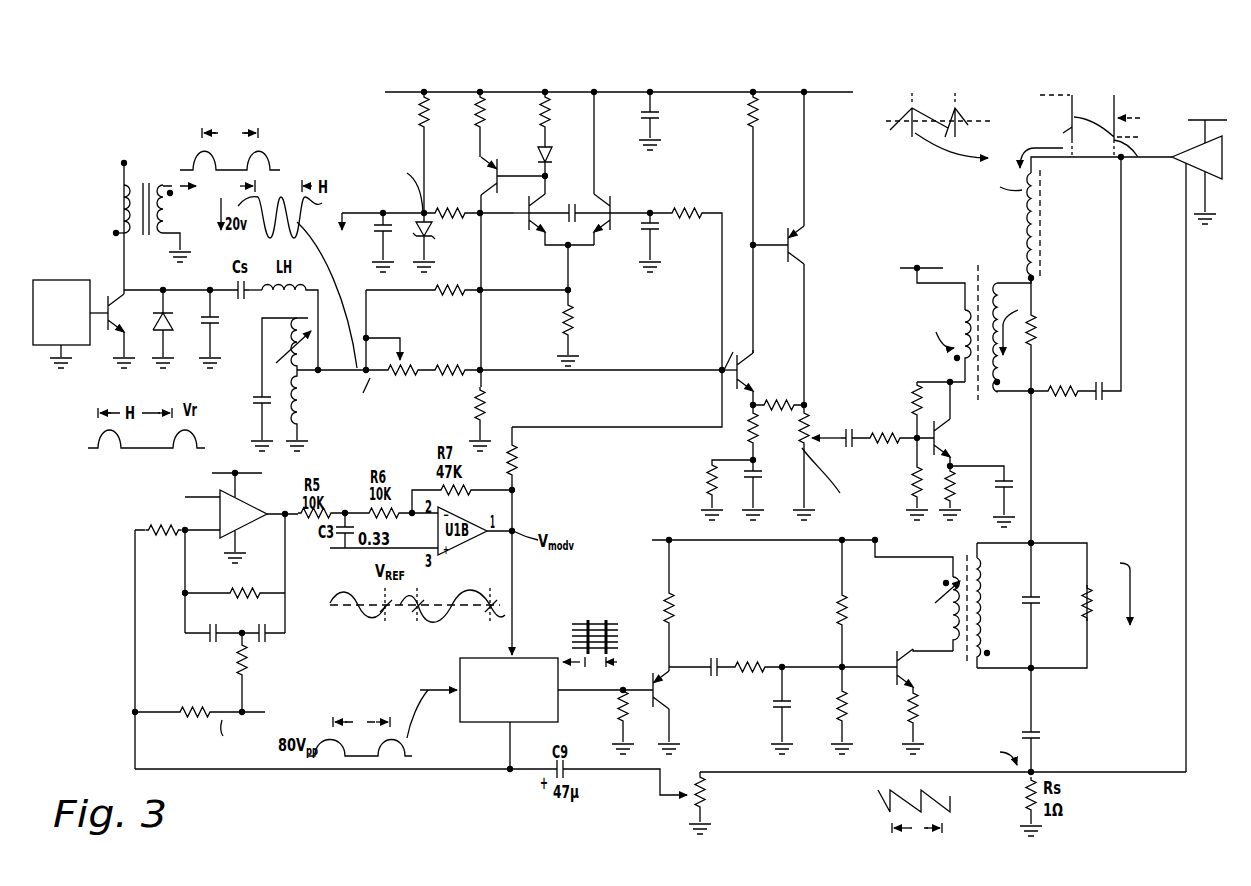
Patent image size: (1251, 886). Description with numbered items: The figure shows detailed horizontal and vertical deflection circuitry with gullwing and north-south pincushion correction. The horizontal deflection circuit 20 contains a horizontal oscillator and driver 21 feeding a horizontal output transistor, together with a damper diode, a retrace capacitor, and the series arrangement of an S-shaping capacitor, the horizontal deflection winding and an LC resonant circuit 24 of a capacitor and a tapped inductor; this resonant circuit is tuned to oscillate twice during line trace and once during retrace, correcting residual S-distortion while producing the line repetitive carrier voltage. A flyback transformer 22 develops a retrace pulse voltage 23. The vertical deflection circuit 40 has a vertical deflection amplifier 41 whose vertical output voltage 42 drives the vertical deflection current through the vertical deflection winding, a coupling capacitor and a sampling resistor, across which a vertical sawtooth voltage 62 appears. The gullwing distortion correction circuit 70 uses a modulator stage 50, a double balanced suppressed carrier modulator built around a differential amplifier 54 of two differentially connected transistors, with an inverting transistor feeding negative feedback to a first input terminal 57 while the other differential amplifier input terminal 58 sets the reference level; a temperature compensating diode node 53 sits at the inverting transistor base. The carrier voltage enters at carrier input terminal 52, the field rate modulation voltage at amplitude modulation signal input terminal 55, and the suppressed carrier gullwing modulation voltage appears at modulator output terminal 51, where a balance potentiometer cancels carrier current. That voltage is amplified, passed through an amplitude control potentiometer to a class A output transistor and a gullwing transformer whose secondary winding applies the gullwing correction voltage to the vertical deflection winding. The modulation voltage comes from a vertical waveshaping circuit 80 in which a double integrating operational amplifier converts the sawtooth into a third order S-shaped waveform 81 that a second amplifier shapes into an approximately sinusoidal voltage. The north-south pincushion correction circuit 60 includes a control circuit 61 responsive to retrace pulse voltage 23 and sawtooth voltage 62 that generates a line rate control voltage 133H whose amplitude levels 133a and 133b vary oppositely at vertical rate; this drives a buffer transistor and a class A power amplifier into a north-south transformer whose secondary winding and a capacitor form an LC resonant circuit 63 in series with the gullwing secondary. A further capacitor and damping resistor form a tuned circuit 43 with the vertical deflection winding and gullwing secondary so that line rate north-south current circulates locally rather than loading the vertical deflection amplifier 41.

The horizontal deflection circuit 20 is at (102, 395).
The horizontal oscillator and driver 21 is at (59, 280).
The flyback transformer 22 is at (110, 214).
The retrace pulse voltage 23 is at (273, 150).
The LC resonant circuit 24 is at (288, 348).
The vertical deflection circuit 40 is at (947, 204).
The vertical deflection amplifier 41 is at (1225, 252).
The vertical output voltage 42 is at (1115, 104).
The tuned circuit 43 is at (1128, 318).
The modulator stage 50 is at (740, 192).
The modulator output terminal 51 is at (721, 370).
The carrier input terminal 52 is at (319, 368).
The diode clamp node 53 is at (543, 176).
The differential amplifier 54 is at (627, 272).
The amplitude modulation signal input terminal 55 is at (513, 491).
The first input terminal 57 is at (651, 212).
The differential amplifier input terminal 58 is at (515, 214).
The north-south pincushion correction circuit 60 is at (649, 587).
The north-south control circuit 61 is at (541, 658).
The vertical sawtooth voltage 62 is at (890, 798).
The LC resonant circuit 63 is at (1072, 678).
The gullwing distortion correction circuit 70 is at (848, 375).
The vertical waveshaping circuit 80 is at (396, 672).
The third order S-shaped waveform 81 is at (380, 608).
The amplitude level 133a is at (589, 624).
The amplitude level 133b is at (605, 624).
The line rate control voltage 133H is at (673, 657).